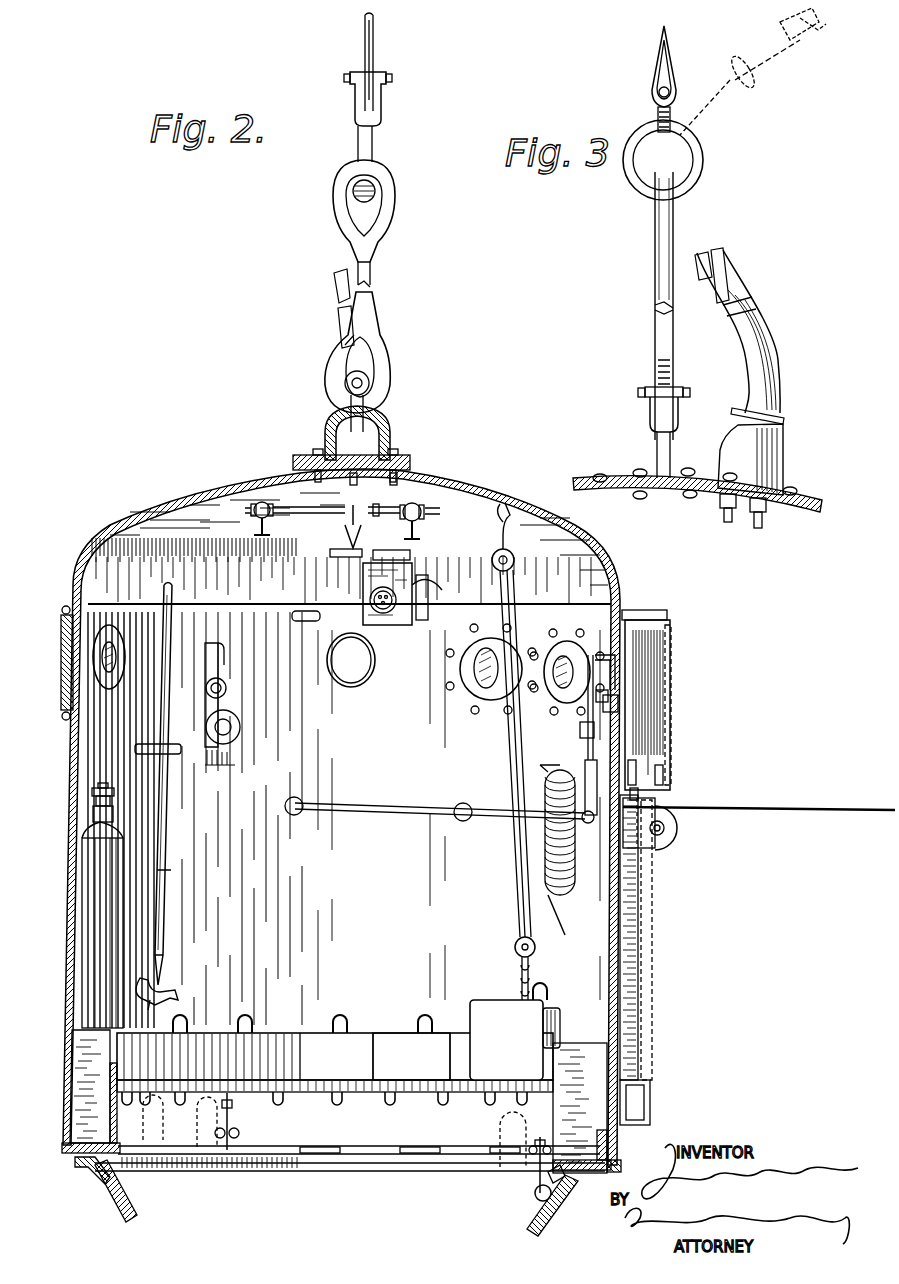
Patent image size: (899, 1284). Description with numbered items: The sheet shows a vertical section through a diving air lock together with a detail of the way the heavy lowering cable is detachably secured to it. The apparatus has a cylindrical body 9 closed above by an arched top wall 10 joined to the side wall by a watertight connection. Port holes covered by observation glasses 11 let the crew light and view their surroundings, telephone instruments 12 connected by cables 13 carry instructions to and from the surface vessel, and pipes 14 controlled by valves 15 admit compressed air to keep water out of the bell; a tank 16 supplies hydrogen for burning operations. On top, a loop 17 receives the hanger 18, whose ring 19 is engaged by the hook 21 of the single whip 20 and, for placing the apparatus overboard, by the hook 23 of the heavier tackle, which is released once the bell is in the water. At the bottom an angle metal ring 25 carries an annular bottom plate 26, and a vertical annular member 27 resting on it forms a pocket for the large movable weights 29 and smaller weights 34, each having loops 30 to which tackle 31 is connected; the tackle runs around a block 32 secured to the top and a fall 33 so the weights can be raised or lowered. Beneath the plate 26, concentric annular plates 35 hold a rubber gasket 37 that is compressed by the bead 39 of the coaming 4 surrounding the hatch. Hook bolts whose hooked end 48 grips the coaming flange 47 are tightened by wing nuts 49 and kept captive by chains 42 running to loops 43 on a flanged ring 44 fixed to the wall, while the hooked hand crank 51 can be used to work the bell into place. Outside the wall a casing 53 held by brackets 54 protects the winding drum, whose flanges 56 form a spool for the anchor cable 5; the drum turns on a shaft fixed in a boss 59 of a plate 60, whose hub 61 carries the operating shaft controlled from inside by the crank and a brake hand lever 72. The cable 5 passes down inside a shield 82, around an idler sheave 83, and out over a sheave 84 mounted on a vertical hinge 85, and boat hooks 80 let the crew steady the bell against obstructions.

In FIG. 2, the coaming 4 is at (133, 1210).
In FIG. 2, the cable 5 is at (759, 795).
In FIG. 2, the cylindrical body 9 is at (70, 765).
In FIG. 2, the top wall 10 is at (190, 492).
In FIG. 3, the top wall 10 is at (800, 516).
In FIG. 2, the observation glasses 11 is at (72, 660).
In FIG. 2, the telephone instruments 12 is at (400, 625).
In FIG. 2, the cables 13 is at (335, 546).
In FIG. 2, the pipes 14 is at (356, 524).
In FIG. 2, the valves 15 is at (266, 538).
In FIG. 2, the tank 16 is at (88, 918).
In FIG. 2, the loop 17 is at (335, 432).
In FIG. 3, the loop 17 is at (654, 453).
In FIG. 2, the hanger 18 is at (372, 330).
In FIG. 3, the hanger 18 is at (654, 353).
In FIG. 3, the ring 19 is at (702, 184).
In FIG. 2, the single whip 20 is at (375, 22).
In FIG. 3, the hook 21 is at (656, 110).
In FIG. 3, the hook 23 is at (753, 268).
In FIG. 2, the angle metal ring 25 is at (63, 1154).
In FIG. 2, the bottom plate 26 is at (604, 1176).
In FIG. 2, the annular member 27 is at (553, 1131).
In FIG. 2, the movable weights 29 is at (515, 1040).
In FIG. 2, the loops 30 is at (184, 1022).
In FIG. 2, the tackle 31 is at (512, 893).
In FIG. 2, the block 32 is at (497, 568).
In FIG. 2, the fall 33 is at (515, 952).
In FIG. 2, the weights 34 is at (411, 1056).
In FIG. 2, the annular plates 35 is at (83, 1172).
In FIG. 2, the gasket 37 is at (608, 1150).
In FIG. 2, the bead 39 is at (562, 1180).
In FIG. 2, the chains 42 is at (497, 1140).
In FIG. 2, the loops 43 is at (394, 1102).
In FIG. 2, the flanged ring 44 is at (335, 1062).
In FIG. 2, the flange 47 is at (537, 1190).
In FIG. 2, the hooked end 48 is at (538, 1200).
In FIG. 2, the wing nuts 49 is at (240, 1133).
In FIG. 2, the hand crank 51 is at (580, 767).
In FIG. 2, the casing 53 is at (665, 684).
In FIG. 2, the brackets 54 is at (630, 612).
In FIG. 2, the flanges 56 is at (664, 625).
In FIG. 2, the boss 59 is at (598, 705).
In FIG. 2, the plate 60 is at (614, 705).
In FIG. 2, the hub 61 is at (600, 735).
In FIG. 2, the hand lever 72 is at (603, 654).
In FIG. 2, the boat hooks 80 is at (165, 920).
In FIG. 2, the shield 82 is at (650, 996).
In FIG. 2, the idler sheave 83 is at (645, 1106).
In FIG. 2, the sheave 84 is at (668, 841).
In FIG. 2, the vertical hinge 85 is at (640, 792).